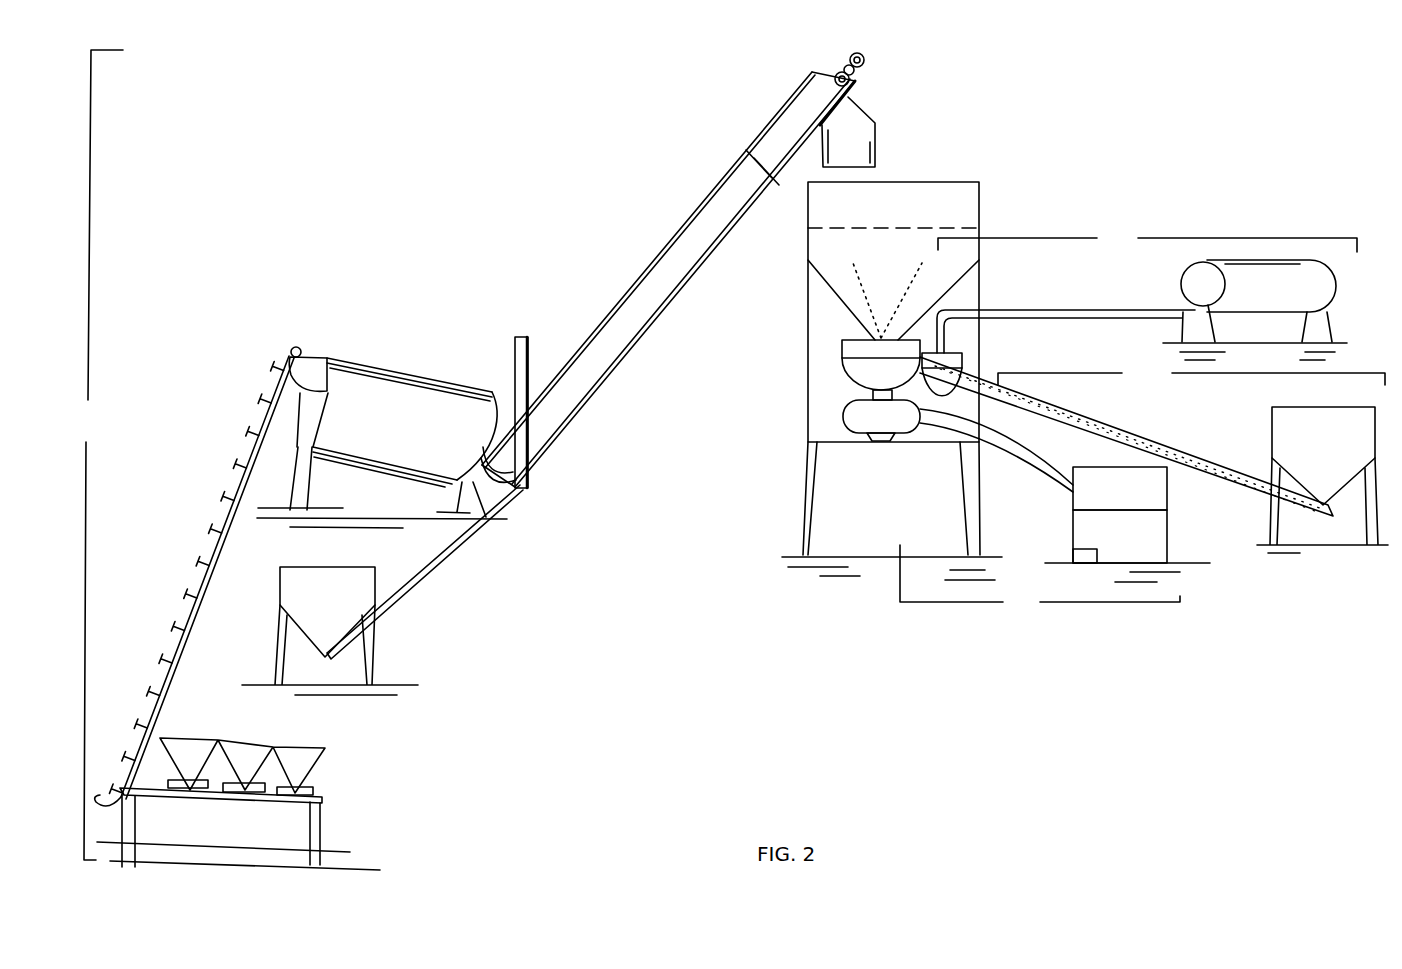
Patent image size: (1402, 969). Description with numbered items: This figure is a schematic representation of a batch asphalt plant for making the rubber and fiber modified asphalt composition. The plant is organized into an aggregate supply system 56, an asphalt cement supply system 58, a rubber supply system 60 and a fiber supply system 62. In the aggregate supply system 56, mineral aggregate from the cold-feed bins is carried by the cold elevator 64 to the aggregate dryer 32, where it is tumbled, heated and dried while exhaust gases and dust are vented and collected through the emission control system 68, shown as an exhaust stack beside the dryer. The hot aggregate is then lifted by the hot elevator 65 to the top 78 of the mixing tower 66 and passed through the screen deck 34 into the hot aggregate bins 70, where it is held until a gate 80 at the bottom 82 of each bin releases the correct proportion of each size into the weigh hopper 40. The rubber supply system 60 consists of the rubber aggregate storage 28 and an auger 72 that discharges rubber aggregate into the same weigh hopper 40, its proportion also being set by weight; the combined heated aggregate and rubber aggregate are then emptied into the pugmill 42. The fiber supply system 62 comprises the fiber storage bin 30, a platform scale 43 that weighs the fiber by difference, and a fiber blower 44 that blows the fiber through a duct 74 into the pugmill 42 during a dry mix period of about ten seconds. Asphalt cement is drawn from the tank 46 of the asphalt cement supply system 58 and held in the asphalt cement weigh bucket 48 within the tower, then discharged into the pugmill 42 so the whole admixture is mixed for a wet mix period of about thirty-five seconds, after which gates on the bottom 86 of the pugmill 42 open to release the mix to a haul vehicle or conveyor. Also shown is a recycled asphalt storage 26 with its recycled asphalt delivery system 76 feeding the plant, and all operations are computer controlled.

The recycled asphalt storage 26 is at (322, 567).
The rubber aggregate storage 28 is at (1272, 425).
The fiber storage bin 30 is at (1168, 534).
The aggregate dryer 32 is at (383, 368).
The screen deck 34 is at (322, 760).
The weigh hopper 40 is at (842, 366).
The pugmill 42 is at (843, 416).
The platform scale 43 is at (1080, 565).
The fiber blower 44 is at (1168, 497).
The supply tank 46 is at (1265, 258).
The asphalt cement weigh bucket 48 is at (963, 362).
The aggregate supply system 56 is at (100, 455).
The asphalt cement supply system 58 is at (1147, 239).
The rubber supply system 60 is at (1191, 373).
The fiber supply system 62 is at (1040, 580).
The cold elevator 64 is at (207, 553).
The hot elevator 65 is at (616, 265).
The mixing tower 66 is at (988, 186).
The emission control system 68 is at (514, 362).
The hot aggregate bins 70 is at (955, 293).
The auger 72 is at (1120, 432).
The duct 74 is at (1010, 437).
The recycled asphalt delivery system 76 is at (424, 571).
The top of the plant mixing tower 78 is at (936, 181).
The gate 80 is at (843, 349).
The bottom of each bin 82 is at (868, 337).
The bottom of pugmill 86 is at (871, 434).